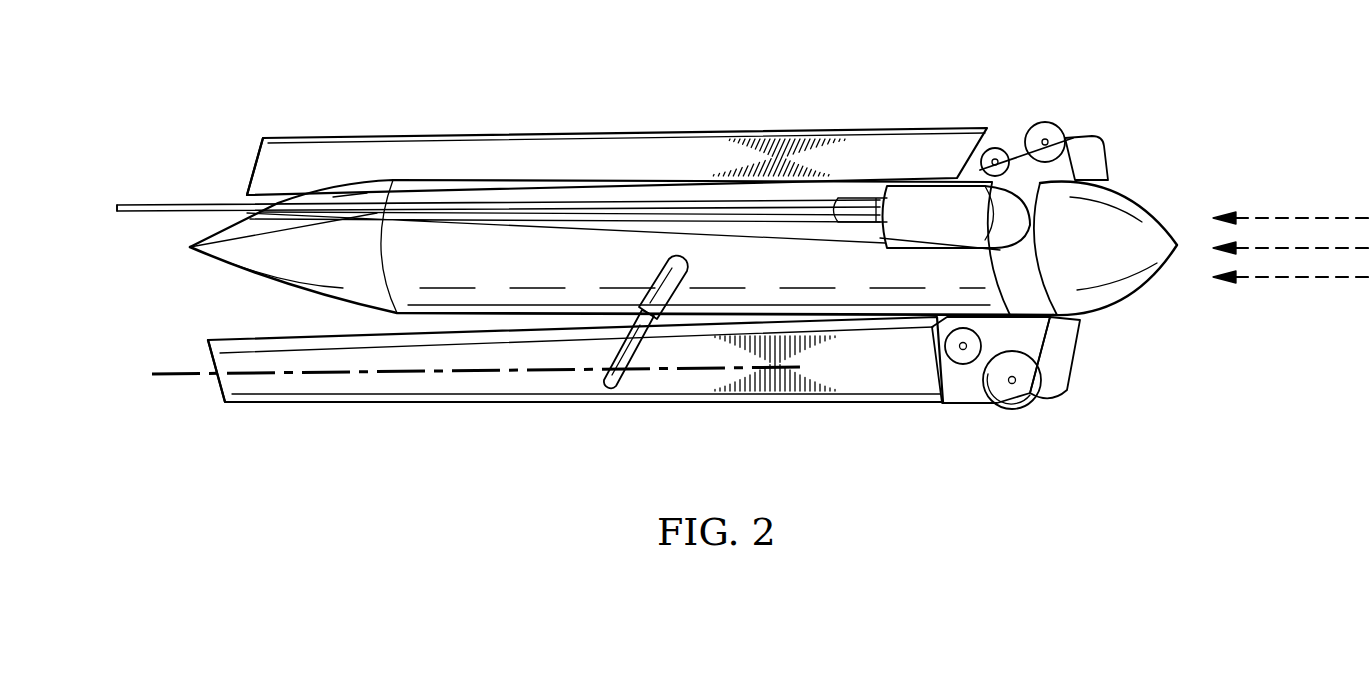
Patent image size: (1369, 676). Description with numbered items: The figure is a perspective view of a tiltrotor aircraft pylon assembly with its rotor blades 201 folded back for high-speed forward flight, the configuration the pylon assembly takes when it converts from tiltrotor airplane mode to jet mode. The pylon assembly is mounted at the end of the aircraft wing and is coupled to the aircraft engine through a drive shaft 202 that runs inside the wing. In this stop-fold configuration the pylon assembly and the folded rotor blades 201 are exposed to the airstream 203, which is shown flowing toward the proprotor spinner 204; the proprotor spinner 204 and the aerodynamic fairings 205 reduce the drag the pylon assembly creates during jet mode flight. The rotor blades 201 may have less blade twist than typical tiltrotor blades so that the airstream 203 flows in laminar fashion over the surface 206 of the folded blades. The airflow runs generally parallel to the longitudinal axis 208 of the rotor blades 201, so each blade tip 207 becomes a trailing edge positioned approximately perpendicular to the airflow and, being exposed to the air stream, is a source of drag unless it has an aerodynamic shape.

The rotor blades 201 is at (707, 133).
The drive shaft 202 is at (640, 385).
The airstream 203 is at (1300, 280).
The proprotor spinner 204 is at (1127, 300).
The aerodynamic fairings 205 is at (1102, 153).
The surface 206 is at (500, 152).
The blade tip 207 is at (256, 160).
The longitudinal axis 208 is at (340, 375).